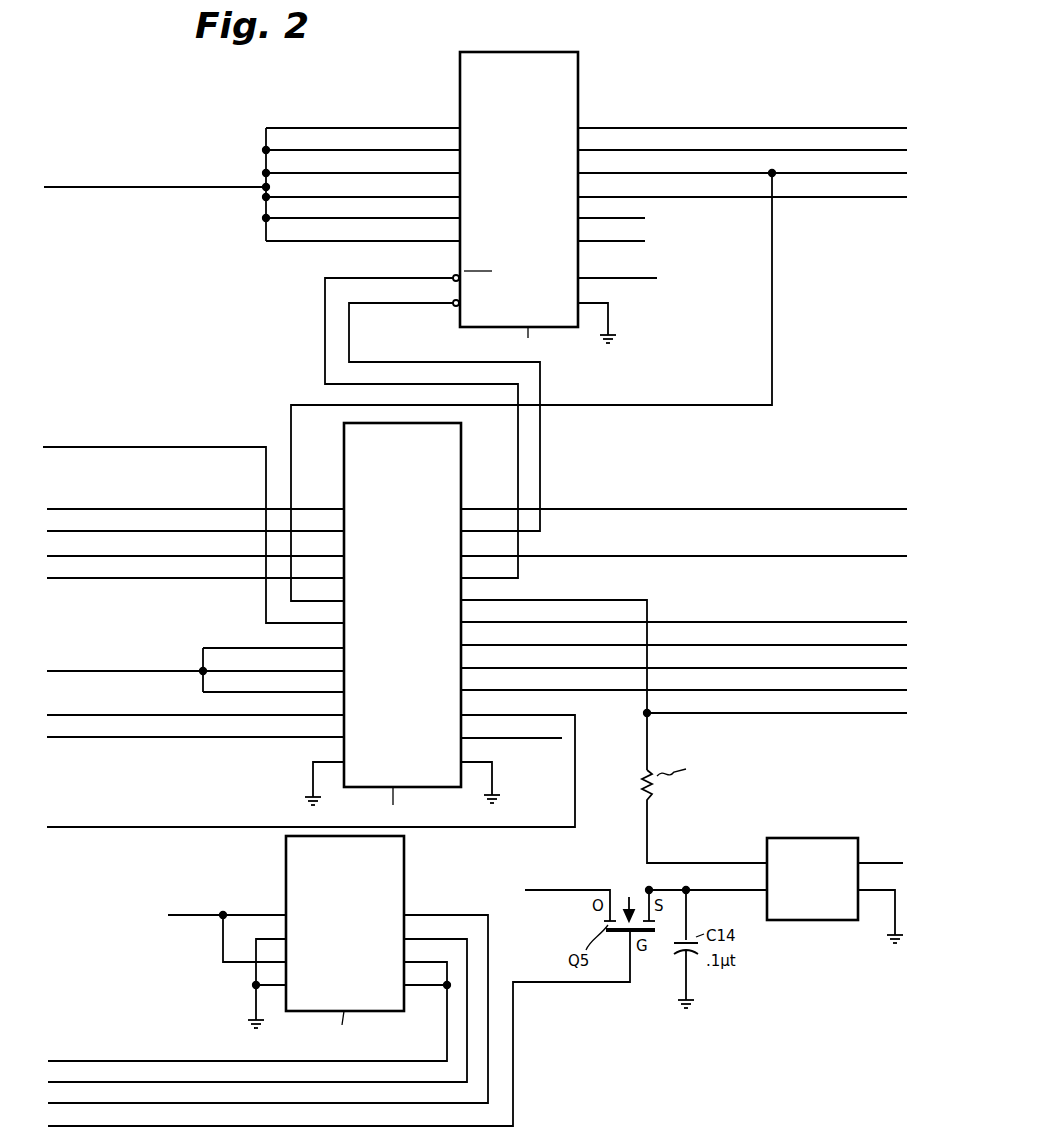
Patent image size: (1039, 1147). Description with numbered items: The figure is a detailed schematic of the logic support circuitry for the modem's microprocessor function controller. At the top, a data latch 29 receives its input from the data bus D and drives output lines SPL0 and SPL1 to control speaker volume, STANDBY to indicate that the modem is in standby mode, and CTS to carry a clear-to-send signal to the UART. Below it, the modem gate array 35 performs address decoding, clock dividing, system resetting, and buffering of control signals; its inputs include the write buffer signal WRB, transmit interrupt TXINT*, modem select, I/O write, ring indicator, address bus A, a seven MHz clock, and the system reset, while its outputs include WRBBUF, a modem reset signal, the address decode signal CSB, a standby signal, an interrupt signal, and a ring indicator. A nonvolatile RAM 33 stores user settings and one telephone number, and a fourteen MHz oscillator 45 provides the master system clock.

The data latch 29 is at (522, 52).
The modem gate array 35 is at (461, 460).
The nonvolatile RAM 33 is at (404, 864).
The 14 MHz oscillator 45 is at (810, 838).